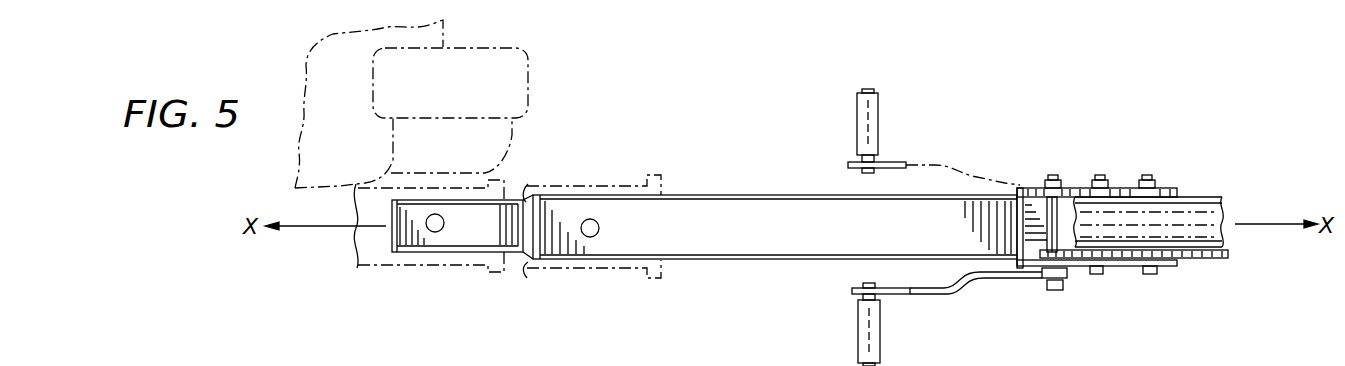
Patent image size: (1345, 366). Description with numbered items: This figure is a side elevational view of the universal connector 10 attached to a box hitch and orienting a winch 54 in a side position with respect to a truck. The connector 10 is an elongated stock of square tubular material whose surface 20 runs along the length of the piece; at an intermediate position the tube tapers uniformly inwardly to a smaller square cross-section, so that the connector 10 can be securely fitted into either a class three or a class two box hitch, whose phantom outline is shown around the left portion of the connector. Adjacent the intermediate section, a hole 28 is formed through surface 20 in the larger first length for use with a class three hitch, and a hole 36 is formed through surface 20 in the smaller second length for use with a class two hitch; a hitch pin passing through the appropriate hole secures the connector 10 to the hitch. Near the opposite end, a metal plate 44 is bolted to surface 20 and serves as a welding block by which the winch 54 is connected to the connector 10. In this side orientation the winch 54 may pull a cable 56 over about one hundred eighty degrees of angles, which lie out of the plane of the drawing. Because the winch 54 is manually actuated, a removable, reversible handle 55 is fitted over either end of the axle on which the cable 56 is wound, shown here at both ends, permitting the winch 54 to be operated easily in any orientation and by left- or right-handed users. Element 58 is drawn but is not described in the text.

The universal connector 10 is at (614, 316).
The surface 20 is at (700, 230).
The hole 28 is at (583, 252).
The hole 36 is at (430, 250).
The metal plate 44 is at (1033, 237).
The winch 54 is at (1205, 258).
The reversible handle 55 is at (870, 108).
The cable 56 is at (1224, 206).
The bracket 58 is at (1123, 316).